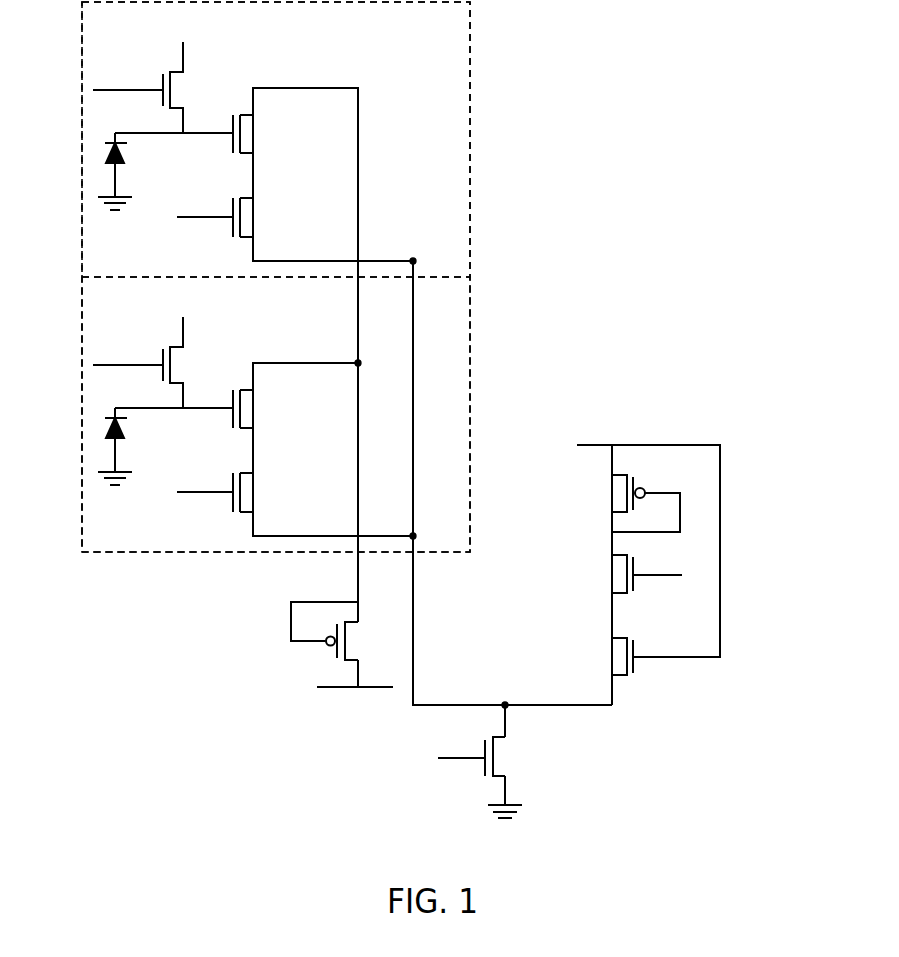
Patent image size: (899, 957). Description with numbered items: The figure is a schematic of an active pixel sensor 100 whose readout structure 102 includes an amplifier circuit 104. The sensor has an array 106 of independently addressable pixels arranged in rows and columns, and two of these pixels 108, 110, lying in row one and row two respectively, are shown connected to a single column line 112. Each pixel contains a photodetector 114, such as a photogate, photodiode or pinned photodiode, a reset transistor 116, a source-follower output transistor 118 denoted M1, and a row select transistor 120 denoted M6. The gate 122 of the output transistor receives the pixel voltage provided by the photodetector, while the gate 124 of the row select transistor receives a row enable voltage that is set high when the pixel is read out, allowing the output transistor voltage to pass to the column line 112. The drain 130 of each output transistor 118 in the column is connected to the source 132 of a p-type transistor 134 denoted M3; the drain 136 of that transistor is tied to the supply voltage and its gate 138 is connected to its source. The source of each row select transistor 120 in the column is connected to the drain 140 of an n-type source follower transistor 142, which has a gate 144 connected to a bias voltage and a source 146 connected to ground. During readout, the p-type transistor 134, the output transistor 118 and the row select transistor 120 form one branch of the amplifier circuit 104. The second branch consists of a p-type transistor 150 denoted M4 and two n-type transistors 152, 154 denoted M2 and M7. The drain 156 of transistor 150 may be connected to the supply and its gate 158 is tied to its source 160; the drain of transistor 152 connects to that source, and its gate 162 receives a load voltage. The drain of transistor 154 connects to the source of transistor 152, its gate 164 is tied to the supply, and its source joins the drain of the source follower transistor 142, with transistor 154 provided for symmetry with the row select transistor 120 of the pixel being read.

The active pixel sensor 100 is at (774, 106).
The readout structure 102 is at (587, 378).
The amplifier circuit 104 is at (500, 586).
The array 106 is at (522, 162).
The pixel 108 is at (82, 47).
The pixel 110 is at (82, 323).
The column line 112 is at (358, 428).
The photodetector 114 is at (117, 172).
The reset transistor 116 is at (196, 77).
The source-follower output transistor 118 is at (277, 149).
The row select transistor 120 is at (277, 228).
The gate of the output transistor 122 is at (233, 118).
The gate of the row select transistor 124 is at (230, 228).
The drain of the output transistor 130 is at (253, 102).
The source of p-type transistor M3 132 is at (357, 610).
The p-type transistor 134 is at (388, 649).
The drain of transistor M3 136 is at (354, 675).
The gate of transistor M3 138 is at (337, 627).
The drain of source follower transistor M5 140 is at (507, 732).
The n-type source follower transistor 142 is at (528, 767).
The gate of source follower transistor M5 144 is at (483, 767).
The source of source follower transistor M5 146 is at (507, 797).
The p-type transistor 150 is at (585, 503).
The n-type transistor 152 is at (588, 590).
The n-type transistor 154 is at (588, 668).
The drain of p-type transistor M4 156 is at (613, 463).
The gate of transistor M4 158 is at (638, 480).
The source of transistor M4 160 is at (612, 525).
The gate of transistor M2 162 is at (636, 557).
The gate of transistor M7 164 is at (638, 667).